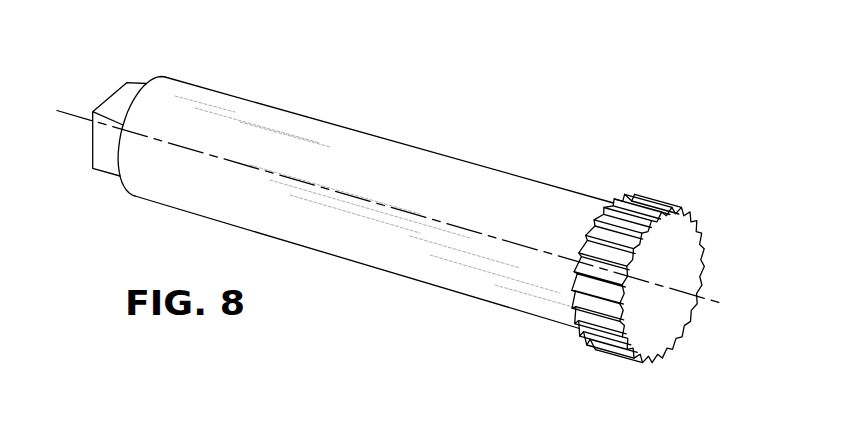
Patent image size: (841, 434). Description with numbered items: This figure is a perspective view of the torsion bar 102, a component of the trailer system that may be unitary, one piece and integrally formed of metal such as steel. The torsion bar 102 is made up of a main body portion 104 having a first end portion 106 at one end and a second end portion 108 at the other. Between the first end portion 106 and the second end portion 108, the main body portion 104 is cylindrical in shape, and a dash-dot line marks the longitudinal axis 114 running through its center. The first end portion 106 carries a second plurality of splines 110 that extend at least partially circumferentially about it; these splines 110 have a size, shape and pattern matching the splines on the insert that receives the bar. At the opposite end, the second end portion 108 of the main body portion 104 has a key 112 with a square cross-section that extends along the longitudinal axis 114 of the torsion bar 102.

The torsion bar 102 is at (302, 115).
The main body portion 104 is at (430, 167).
The first end portion 106 is at (608, 167).
The second end portion 108 is at (147, 75).
The second plurality of splines 110 is at (670, 203).
The key 112 is at (105, 102).
The longitudinal axis 114 is at (70, 115).